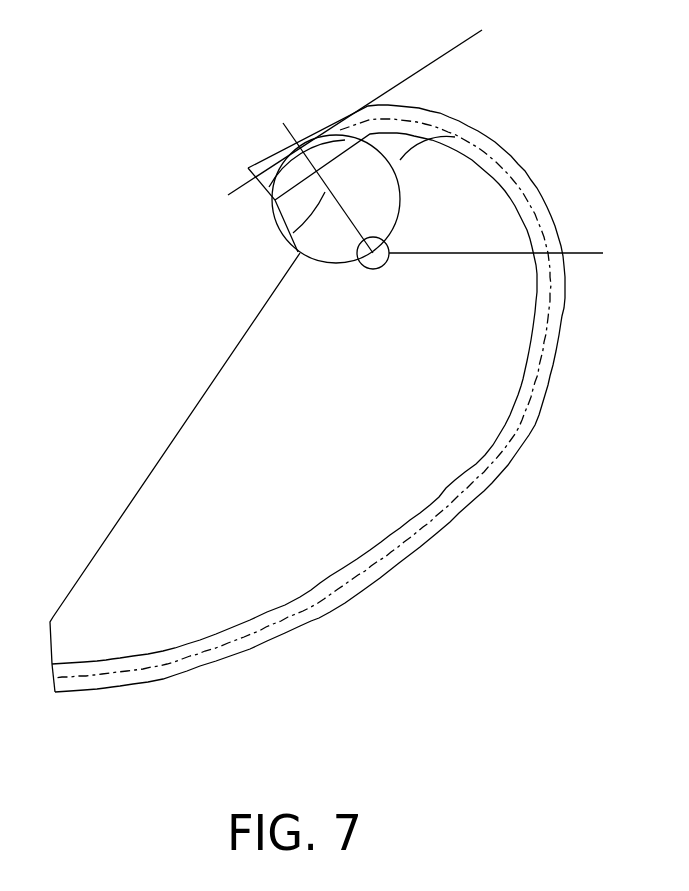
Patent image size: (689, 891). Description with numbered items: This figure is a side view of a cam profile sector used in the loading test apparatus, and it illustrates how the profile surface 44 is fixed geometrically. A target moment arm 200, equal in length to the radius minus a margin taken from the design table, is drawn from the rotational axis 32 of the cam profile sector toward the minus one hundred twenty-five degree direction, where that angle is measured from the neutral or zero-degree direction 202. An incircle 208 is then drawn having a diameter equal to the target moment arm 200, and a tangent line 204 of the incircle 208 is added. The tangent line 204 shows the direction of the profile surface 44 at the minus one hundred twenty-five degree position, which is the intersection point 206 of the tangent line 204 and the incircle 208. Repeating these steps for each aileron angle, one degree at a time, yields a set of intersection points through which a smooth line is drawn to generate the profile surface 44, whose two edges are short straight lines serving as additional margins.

The rotational axis 32 is at (375, 270).
The profile surface 44 is at (553, 360).
The target moment arm 200 is at (290, 235).
The neutral direction 202 is at (561, 252).
The tangent line 204 is at (462, 43).
The intersection point 206 is at (275, 200).
The incircle 208 is at (436, 139).